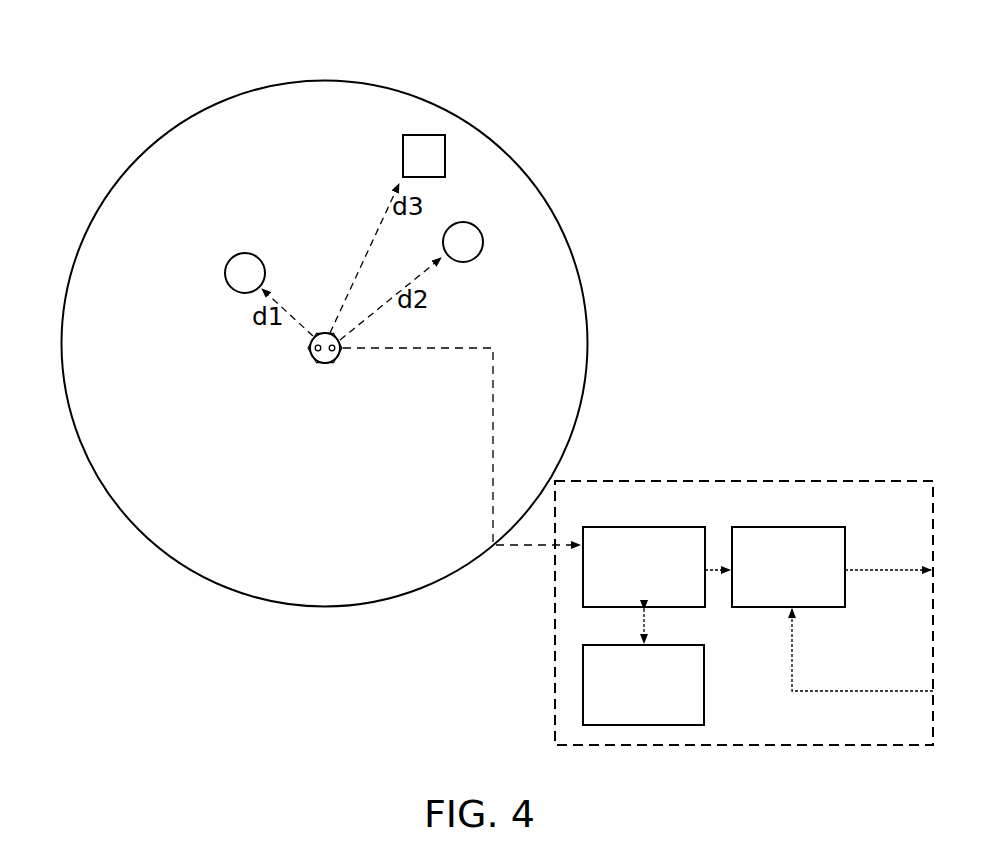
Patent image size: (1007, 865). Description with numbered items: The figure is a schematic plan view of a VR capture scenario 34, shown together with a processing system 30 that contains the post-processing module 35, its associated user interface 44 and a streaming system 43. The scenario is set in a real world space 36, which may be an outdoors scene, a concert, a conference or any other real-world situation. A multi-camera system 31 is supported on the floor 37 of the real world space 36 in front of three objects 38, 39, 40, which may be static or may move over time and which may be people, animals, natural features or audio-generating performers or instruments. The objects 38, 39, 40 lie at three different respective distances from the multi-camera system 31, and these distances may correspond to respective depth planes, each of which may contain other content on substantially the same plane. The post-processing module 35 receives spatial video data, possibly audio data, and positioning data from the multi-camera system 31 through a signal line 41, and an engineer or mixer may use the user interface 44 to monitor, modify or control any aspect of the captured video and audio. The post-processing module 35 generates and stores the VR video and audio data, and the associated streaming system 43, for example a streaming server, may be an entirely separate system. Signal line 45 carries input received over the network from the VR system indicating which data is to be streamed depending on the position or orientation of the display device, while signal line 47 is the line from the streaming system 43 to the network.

The processing system 30 is at (914, 516).
The multi-camera system 31 is at (325, 365).
The VR capture scenario 34 is at (102, 63).
The post-processing module 35 is at (648, 527).
The real world space 36 is at (102, 202).
The floor 37 is at (200, 522).
The object 38 is at (243, 250).
The object 39 is at (484, 240).
The object 40 is at (403, 158).
The signal line 41 is at (493, 460).
The streaming system 43 is at (788, 527).
The user interface 44 is at (705, 692).
The signal line 45 is at (848, 691).
The signal line 47 is at (877, 570).